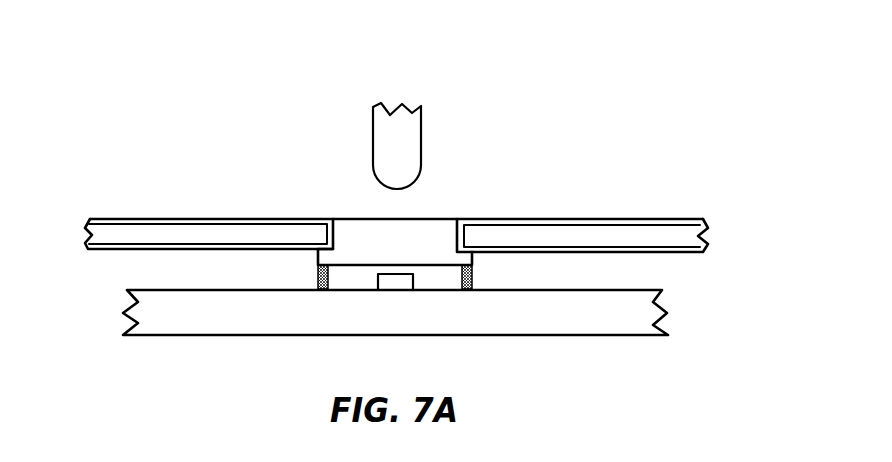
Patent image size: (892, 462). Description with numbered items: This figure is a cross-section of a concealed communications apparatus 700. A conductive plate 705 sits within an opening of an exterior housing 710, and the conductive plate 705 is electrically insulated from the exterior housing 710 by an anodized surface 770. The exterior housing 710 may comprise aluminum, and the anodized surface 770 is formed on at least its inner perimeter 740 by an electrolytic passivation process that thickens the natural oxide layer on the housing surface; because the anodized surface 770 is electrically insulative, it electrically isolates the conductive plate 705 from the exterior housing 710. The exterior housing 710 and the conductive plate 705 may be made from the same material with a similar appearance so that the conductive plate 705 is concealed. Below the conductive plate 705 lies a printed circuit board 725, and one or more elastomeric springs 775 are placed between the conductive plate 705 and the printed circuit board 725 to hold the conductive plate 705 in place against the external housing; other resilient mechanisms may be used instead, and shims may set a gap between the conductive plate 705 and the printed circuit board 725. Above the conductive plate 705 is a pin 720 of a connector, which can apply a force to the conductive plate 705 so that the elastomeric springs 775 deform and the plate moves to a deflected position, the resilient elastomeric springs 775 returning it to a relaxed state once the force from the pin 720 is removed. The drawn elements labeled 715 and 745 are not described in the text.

The concealed communications apparatus 700 is at (652, 120).
The conductive plate 705 is at (412, 238).
The exterior housing 710 is at (684, 235).
The contact pad 715 is at (393, 283).
The pin 720 is at (395, 130).
The printed circuit board 725 is at (634, 320).
The inner perimeter 740 is at (333, 237).
The inner layer of left plate 745 is at (325, 236).
The anodized surface 770 is at (575, 223).
The elastomeric springs 775 is at (473, 278).